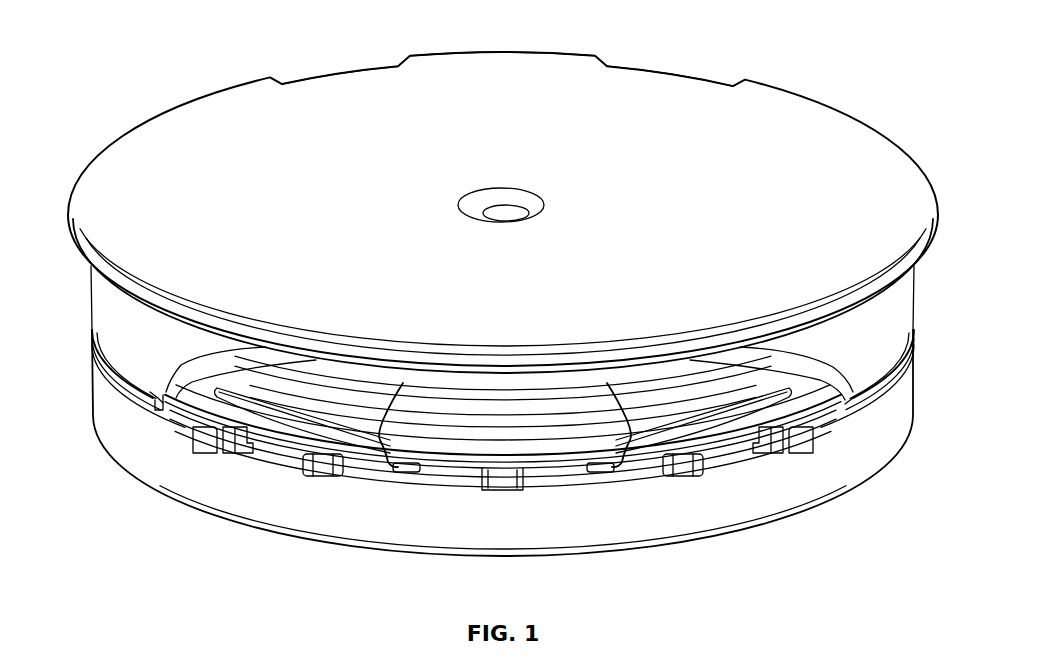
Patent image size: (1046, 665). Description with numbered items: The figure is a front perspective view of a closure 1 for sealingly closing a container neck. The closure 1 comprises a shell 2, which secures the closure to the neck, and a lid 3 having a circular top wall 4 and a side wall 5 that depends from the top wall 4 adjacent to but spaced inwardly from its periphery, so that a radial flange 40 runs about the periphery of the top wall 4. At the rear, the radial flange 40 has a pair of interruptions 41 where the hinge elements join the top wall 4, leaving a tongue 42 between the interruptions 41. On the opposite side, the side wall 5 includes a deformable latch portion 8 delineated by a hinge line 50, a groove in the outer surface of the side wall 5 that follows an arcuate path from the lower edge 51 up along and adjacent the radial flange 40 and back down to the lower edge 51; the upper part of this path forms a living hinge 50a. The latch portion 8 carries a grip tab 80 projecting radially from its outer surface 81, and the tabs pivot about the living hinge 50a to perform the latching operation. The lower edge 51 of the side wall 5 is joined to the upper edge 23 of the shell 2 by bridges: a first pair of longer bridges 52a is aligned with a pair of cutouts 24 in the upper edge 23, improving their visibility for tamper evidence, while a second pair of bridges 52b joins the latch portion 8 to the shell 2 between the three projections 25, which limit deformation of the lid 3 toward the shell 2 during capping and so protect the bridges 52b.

The closure 1 is at (830, 62).
The shell 2 is at (495, 537).
The lid 3 is at (108, 131).
The top wall 4 is at (495, 172).
The side wall 5 is at (864, 342).
The deformable latch portion 8 is at (802, 409).
The upper edge 23 is at (157, 400).
The cutouts 24 is at (203, 437).
The projections 25 is at (500, 484).
The radial flange 40 is at (920, 203).
The interruptions 41 is at (350, 67).
The tongue 42 is at (502, 62).
The hinge line 50 is at (793, 362).
The living hinge 50a is at (482, 390).
The lower edge 51 is at (178, 420).
The first pair of bridges 52a is at (233, 447).
The second pair of bridges 52b is at (403, 383).
The grip tab 80 is at (535, 452).
The outer surface 81 is at (503, 410).